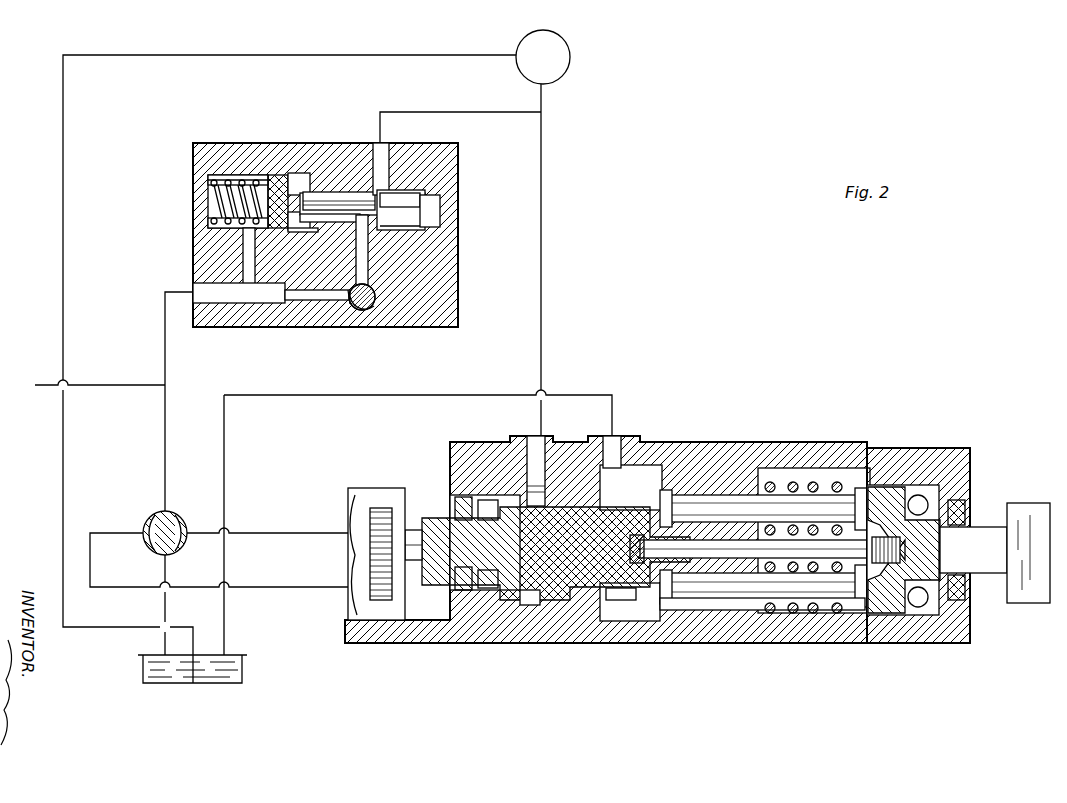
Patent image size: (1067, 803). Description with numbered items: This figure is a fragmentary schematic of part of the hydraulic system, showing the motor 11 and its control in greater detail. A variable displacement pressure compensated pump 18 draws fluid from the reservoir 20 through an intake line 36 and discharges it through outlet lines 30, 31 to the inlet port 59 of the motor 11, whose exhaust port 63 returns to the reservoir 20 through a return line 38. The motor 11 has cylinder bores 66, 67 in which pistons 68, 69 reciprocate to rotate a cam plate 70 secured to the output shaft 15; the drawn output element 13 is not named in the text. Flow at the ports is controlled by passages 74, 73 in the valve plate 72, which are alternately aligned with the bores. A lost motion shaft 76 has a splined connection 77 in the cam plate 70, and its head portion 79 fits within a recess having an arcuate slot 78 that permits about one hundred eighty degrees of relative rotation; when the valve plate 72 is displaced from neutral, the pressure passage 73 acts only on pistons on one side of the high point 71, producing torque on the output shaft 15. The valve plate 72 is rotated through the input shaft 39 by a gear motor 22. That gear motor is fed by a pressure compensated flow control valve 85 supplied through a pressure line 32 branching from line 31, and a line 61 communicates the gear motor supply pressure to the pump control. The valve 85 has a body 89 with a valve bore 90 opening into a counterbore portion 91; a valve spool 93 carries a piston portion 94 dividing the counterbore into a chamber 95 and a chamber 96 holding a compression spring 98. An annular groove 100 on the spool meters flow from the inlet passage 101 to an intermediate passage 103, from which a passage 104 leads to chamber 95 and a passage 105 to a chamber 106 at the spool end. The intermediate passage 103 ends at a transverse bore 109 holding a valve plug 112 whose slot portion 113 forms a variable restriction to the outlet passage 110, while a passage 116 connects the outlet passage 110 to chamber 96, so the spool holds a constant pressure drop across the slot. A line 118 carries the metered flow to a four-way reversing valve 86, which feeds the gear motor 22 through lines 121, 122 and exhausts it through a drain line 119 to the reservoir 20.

The motor 11 is at (780, 442).
The load block 13 is at (1020, 502).
The output shaft 15 is at (990, 578).
The pump 18 is at (572, 40).
The reservoir 20 is at (243, 676).
The gear motor 22 is at (390, 488).
The outlet line 30 is at (544, 95).
The outlet line 31 is at (544, 300).
The pressure line 32 is at (460, 112).
The intake line 36 is at (62, 114).
The return line 38 is at (350, 395).
The input shaft 39 is at (422, 530).
The inlet port 59 is at (538, 458).
The line 61 is at (105, 395).
The exhaust port 63 is at (606, 440).
The cylinder bore 66 is at (698, 492).
The cylinder bore 67 is at (686, 605).
The piston 68 is at (740, 500).
The piston 69 is at (736, 603).
The cam plate 70 is at (905, 460).
The high point 71 is at (862, 445).
The valve plate 72 is at (580, 600).
The passage 73 is at (603, 600).
The passage 74 is at (640, 470).
The lost motion shaft 76 is at (812, 610).
The splined connection 77 is at (900, 550).
The arcuate slot 78 is at (631, 558).
The head portion 79 is at (645, 545).
The pressure compensated flow control valve 85 is at (322, 143).
The four-way reversing valve 86 is at (143, 512).
The body 89 is at (458, 270).
The valve bore 90 is at (424, 192).
The counterbore portion 91 is at (220, 174).
The valve spool 93 is at (330, 226).
The piston portion 94 is at (285, 174).
The chamber 95 is at (312, 178).
The chamber 96 is at (208, 180).
The compression spring 98 is at (208, 205).
The annular groove 100 is at (357, 192).
The inlet passage 101 is at (374, 145).
The intermediate passage 103 is at (368, 258).
The passage 104 is at (310, 230).
The passage 105 is at (422, 230).
The chamber 106 is at (440, 202).
The transverse bore 109 is at (367, 310).
The outlet passage 110 is at (266, 300).
The valve plug 112 is at (376, 295).
The slot portion 113 is at (347, 308).
The passage 116 is at (161, 247).
The line 118 is at (150, 345).
The drain line 119 is at (162, 604).
The line 121 is at (292, 533).
The line 122 is at (275, 590).